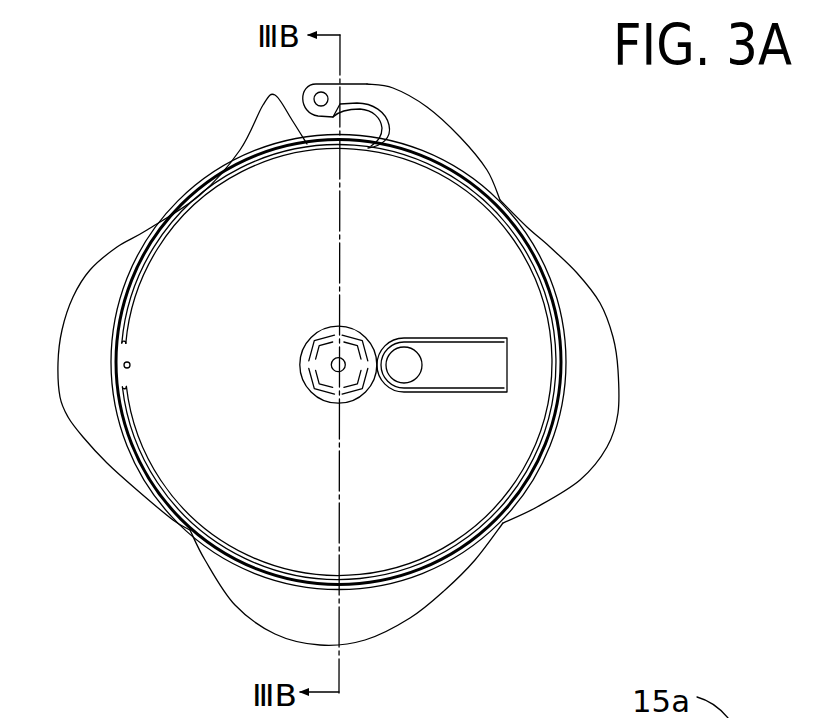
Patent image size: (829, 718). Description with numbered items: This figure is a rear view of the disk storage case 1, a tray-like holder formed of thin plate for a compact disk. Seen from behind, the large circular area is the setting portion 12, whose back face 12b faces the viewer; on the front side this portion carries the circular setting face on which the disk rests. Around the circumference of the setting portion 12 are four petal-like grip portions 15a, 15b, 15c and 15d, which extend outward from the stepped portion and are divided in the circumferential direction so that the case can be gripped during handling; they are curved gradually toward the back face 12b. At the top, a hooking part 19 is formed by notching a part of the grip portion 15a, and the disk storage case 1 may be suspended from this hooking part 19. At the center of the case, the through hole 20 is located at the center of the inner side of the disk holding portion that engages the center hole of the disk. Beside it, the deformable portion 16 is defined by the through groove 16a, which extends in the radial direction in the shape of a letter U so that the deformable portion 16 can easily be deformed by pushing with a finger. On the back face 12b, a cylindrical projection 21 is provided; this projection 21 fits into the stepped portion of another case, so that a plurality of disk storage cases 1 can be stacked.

The disk storage case 1 is at (509, 181).
The setting portion 12 is at (199, 241).
The back face 12b is at (488, 253).
The cylindrical projection 21 is at (385, 582).
The grip portion 15a is at (392, 103).
The grip portion 15d is at (597, 403).
The grip portion 15c is at (368, 628).
The grip portion 15b is at (68, 378).
The hooking part 19 is at (360, 117).
The through hole 20 is at (300, 365).
The deformable portion 16 is at (458, 357).
The through groove 16a is at (404, 393).